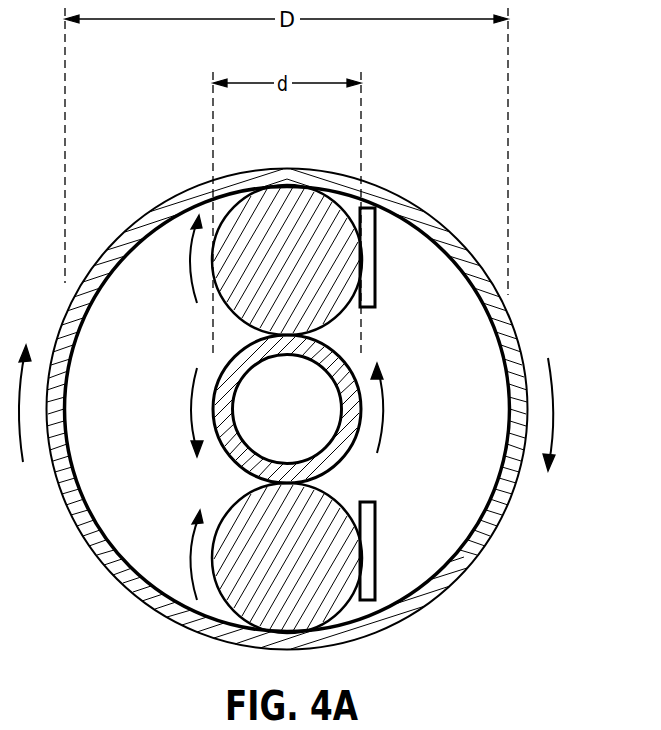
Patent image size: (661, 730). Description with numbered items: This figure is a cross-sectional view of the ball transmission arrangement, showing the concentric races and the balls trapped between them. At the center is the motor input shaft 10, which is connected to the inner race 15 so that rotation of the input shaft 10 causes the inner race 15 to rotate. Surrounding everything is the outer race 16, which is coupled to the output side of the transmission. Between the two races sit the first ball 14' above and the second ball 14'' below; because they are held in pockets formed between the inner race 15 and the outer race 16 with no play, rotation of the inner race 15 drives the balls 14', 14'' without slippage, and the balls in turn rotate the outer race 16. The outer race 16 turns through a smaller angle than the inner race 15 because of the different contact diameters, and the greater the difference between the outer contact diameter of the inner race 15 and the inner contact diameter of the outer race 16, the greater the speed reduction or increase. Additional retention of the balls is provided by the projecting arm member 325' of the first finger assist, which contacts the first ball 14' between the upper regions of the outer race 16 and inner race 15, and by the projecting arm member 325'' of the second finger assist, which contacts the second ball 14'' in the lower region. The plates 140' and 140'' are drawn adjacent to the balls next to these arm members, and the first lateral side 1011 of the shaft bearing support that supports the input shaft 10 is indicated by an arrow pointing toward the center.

The outer race 16 is at (515, 495).
The first ball 14' is at (262, 267).
The second ball 14'' is at (245, 558).
The inner race 15 is at (350, 365).
The input shaft 10 is at (287, 412).
The first lateral side 1011 is at (400, 407).
The first plate 140' is at (401, 234).
The second plate 140'' is at (415, 574).
The projecting arm member 325' is at (474, 264).
The projecting arm member 325'' is at (465, 563).